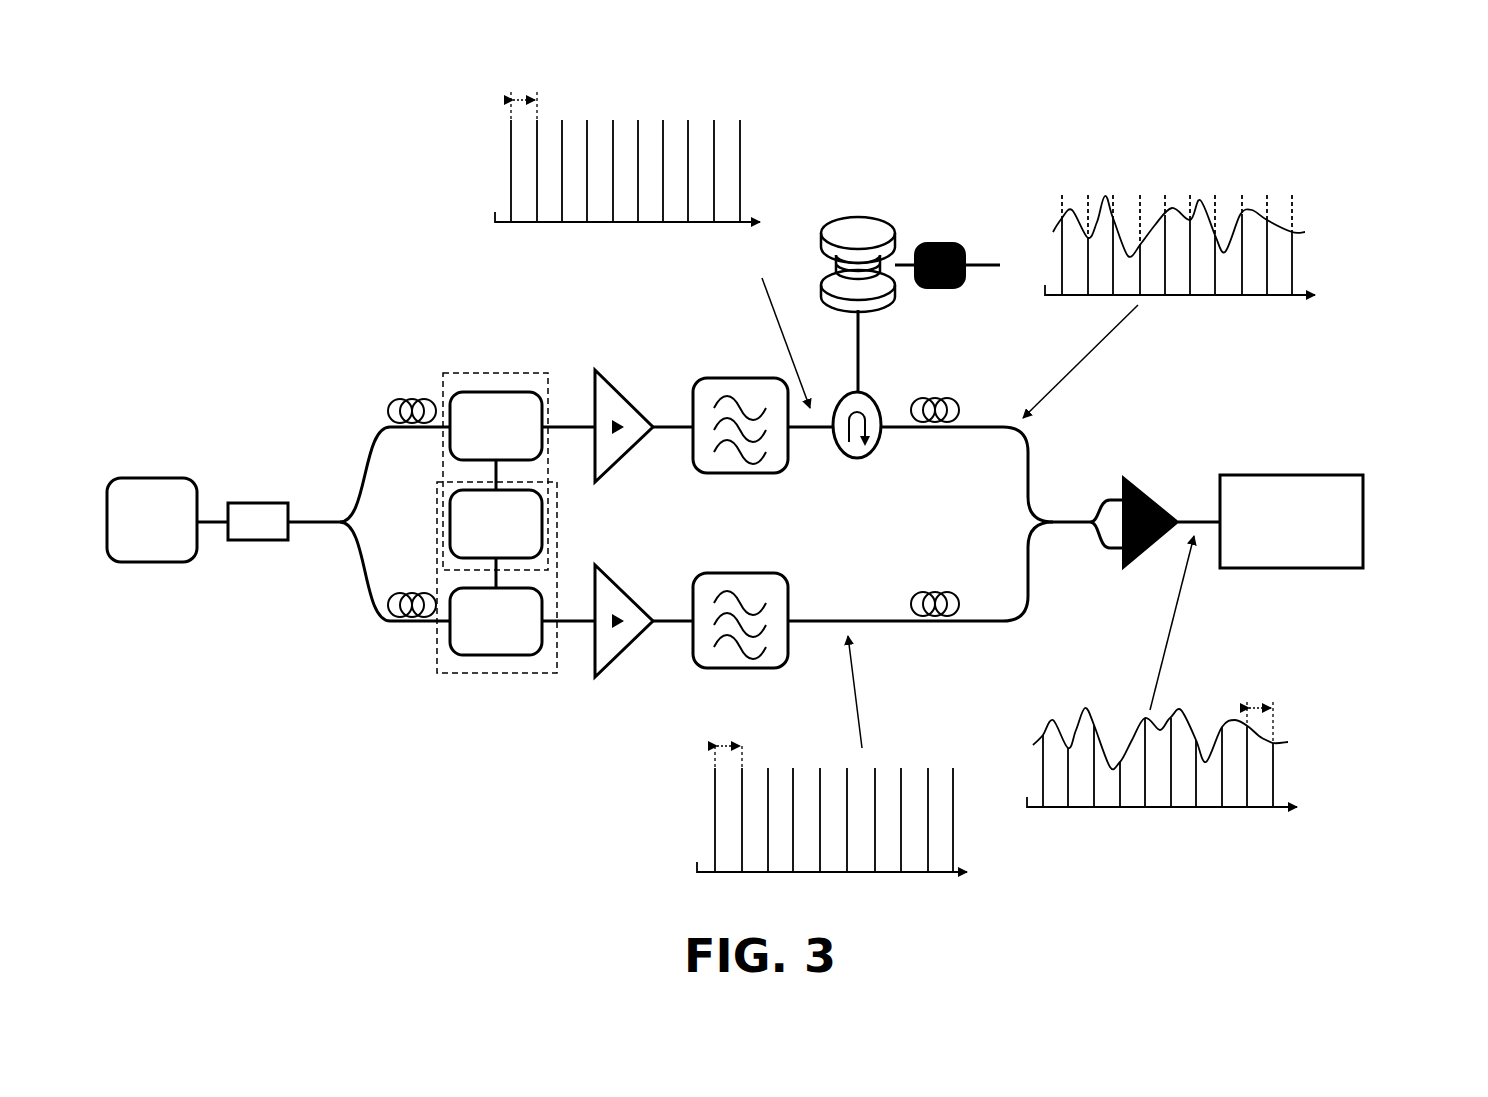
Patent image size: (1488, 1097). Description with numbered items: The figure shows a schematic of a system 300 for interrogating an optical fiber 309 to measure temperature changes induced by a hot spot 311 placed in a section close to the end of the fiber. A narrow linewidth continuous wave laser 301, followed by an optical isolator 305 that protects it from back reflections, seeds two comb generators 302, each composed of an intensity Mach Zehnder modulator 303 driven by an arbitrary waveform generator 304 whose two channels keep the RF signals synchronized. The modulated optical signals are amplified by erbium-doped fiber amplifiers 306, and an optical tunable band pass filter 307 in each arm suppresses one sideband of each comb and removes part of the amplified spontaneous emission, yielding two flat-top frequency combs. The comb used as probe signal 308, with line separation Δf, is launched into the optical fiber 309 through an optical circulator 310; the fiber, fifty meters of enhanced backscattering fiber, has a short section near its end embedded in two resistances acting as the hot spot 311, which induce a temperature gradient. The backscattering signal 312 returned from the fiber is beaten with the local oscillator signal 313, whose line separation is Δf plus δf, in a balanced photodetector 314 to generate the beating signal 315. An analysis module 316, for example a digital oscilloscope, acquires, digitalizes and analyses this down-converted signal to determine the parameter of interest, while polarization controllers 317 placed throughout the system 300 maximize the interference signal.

The system 300 is at (708, 423).
The narrow linewidth continuous wave laser 301 is at (140, 478).
The comb generator 302 is at (470, 372).
The intensity Mach Zehnder modulator 303 is at (520, 392).
The arbitrary waveform generator 304 is at (448, 520).
The optical isolator 305 is at (253, 543).
The erbium-doped fiber amplifier 306 is at (600, 370).
The optical tunable band pass filter 307 is at (703, 378).
The frequency comb used as probe signal 308 is at (498, 171).
The optical fiber under test 309 is at (835, 232).
The optical circulator 310 is at (873, 400).
The hot spot 311 is at (960, 243).
The backscattering signal 312 is at (1220, 176).
The local oscillator signal 313 is at (693, 818).
The balanced photodetector 314 is at (1128, 575).
The beating signal 315 is at (1294, 716).
The analysis module 316 is at (1305, 480).
The polarization controller 317 is at (390, 405).